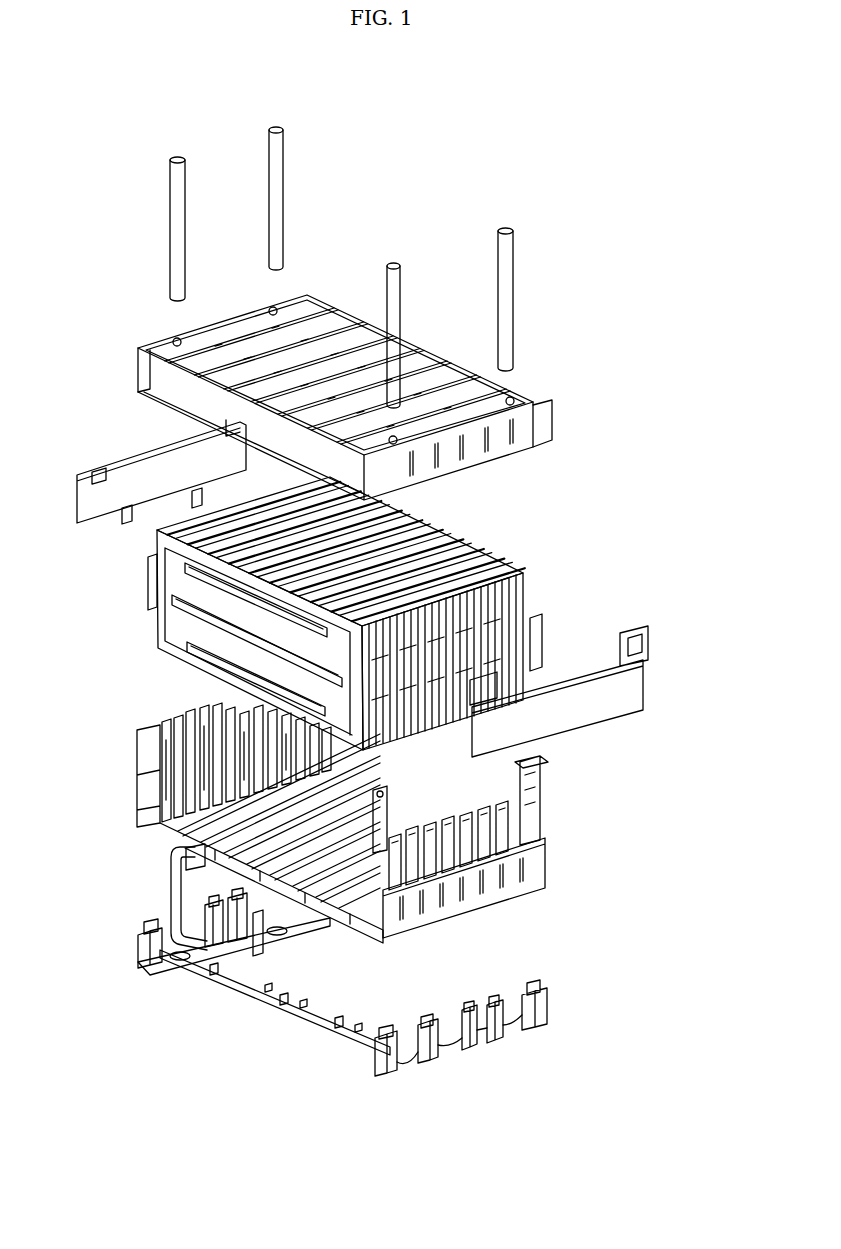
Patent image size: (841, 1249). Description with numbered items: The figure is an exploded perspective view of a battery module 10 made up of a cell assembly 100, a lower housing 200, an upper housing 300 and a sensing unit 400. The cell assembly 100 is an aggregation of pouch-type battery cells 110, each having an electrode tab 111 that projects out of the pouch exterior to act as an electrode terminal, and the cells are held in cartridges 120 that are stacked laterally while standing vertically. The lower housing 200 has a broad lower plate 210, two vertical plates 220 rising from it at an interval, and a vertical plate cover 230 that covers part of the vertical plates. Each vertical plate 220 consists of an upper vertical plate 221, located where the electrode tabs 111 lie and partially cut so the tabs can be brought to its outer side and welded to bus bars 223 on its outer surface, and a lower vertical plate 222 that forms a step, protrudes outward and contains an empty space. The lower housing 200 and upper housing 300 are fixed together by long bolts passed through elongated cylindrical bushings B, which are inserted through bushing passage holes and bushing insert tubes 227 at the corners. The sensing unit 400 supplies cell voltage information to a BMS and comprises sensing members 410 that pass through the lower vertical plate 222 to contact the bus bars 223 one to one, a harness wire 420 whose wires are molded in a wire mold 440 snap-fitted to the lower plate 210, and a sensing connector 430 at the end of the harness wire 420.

The battery module 10 is at (187, 89).
The bushing B is at (285, 156).
The upper housing 300 is at (544, 385).
The vertical plate cover 230 is at (95, 472).
The cell assembly 100 is at (346, 613).
The battery cell 110 is at (530, 590).
The electrode tab 111 is at (148, 580).
The cartridge 120 is at (178, 622).
The lower housing 200 is at (372, 802).
The lower plate 210 is at (375, 797).
The vertical plate 220 is at (372, 831).
The upper vertical plate 221 is at (540, 810).
The lower vertical plate 222 is at (540, 862).
The bus bar 223 is at (458, 812).
The bushing insert tube 227 is at (180, 720).
The sensing unit 400 is at (308, 950).
The sensing member 410 is at (138, 946).
The harness wire 420 is at (172, 890).
The sensing connector 430 is at (183, 857).
The wire mold 440 is at (315, 1000).